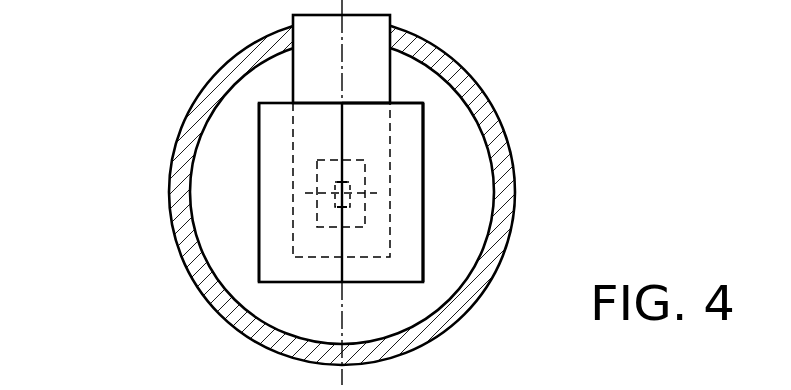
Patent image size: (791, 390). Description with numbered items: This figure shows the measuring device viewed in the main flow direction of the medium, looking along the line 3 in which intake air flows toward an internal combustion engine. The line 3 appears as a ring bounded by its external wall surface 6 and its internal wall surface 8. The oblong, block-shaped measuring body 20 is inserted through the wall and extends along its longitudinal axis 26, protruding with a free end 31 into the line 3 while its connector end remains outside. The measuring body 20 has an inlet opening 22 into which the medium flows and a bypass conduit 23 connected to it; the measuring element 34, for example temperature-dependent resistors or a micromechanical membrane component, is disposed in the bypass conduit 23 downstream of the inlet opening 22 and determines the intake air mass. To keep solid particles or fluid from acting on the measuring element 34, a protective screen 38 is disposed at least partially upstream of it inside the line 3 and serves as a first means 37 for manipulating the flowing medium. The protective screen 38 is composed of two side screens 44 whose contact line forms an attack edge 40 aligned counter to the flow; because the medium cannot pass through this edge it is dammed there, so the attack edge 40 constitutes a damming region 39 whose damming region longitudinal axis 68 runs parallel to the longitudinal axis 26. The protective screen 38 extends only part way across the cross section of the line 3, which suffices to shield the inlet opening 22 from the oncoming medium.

The line 3 is at (392, 195).
The external wall surface 6 is at (170, 223).
The internal wall surface 8 is at (207, 248).
The measuring body 20 is at (385, 232).
The inlet opening 22 is at (322, 213).
The bypass conduit 23 is at (335, 218).
The longitudinal axis 26 is at (400, 51).
The free end 31 is at (370, 265).
The measuring element 34 is at (347, 187).
The first means for manipulating the flowing medium 37 is at (240, 180).
The protective screen 38 is at (278, 103).
The damming region 39 is at (383, 125).
The attack edge 40 is at (472, 183).
The side screen 44 is at (275, 155).
The damming region longitudinal axis 68 is at (345, 0).